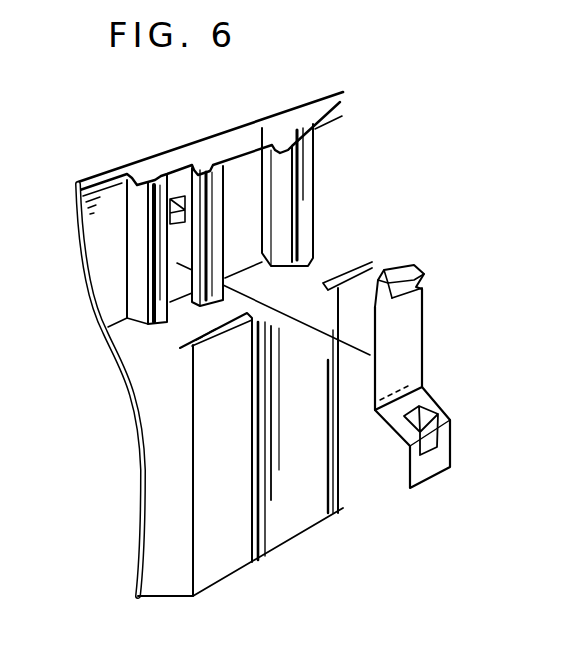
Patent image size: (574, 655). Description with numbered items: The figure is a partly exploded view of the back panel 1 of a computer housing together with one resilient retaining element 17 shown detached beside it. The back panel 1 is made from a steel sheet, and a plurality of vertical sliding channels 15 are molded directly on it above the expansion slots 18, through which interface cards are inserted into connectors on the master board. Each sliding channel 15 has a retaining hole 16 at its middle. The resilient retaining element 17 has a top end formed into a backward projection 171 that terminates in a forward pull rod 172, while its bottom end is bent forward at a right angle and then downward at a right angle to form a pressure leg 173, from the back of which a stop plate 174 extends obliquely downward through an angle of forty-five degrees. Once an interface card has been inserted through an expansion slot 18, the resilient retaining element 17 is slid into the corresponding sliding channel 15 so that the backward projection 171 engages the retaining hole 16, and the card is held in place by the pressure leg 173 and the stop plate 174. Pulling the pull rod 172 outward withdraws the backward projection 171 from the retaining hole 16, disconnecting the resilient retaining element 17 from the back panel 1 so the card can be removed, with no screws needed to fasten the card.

The back panel 1 is at (204, 343).
The sliding channel 15 is at (148, 173).
The retaining hole 16 is at (177, 197).
The resilient retaining element 17 is at (445, 357).
The expansion slot 18 is at (206, 462).
The backward projection 171 is at (392, 268).
The pull rod 172 is at (417, 273).
The pressure leg 173 is at (433, 476).
The stop plate 174 is at (440, 443).